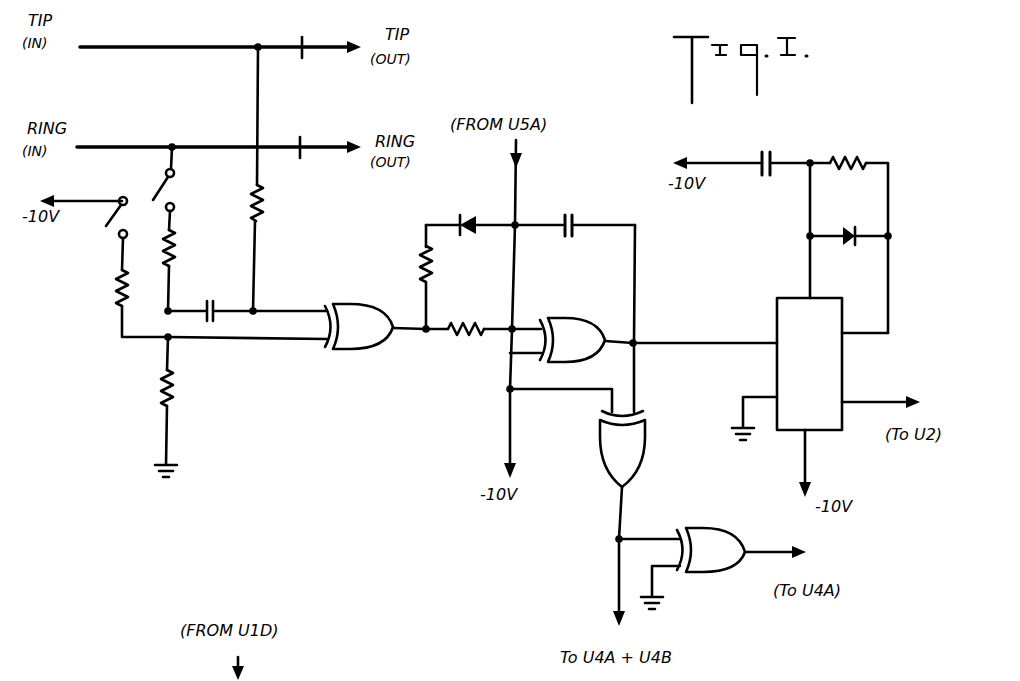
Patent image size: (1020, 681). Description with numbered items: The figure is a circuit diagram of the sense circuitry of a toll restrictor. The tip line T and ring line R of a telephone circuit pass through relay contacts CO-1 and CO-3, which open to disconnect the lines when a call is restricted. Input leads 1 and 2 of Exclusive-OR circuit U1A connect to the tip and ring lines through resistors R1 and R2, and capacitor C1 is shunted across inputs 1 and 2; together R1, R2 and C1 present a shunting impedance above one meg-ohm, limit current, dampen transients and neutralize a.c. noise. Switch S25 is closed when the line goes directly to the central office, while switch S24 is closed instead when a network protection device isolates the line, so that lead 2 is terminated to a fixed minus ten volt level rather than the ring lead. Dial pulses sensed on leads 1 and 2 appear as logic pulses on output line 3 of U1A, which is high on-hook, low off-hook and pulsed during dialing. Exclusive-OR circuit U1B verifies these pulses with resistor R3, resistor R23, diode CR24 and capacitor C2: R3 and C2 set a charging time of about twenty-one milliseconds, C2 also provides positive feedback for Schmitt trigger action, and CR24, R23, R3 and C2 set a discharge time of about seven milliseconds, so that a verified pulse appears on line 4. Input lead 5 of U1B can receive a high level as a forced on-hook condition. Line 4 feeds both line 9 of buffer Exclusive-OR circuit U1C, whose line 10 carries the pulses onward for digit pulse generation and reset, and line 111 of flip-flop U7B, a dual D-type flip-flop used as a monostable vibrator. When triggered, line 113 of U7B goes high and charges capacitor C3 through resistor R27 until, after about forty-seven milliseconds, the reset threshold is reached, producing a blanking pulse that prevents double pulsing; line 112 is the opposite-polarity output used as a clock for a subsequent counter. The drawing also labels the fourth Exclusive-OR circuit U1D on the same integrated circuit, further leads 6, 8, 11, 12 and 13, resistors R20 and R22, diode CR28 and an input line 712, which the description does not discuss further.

The input lead 1 is at (304, 308).
The input lead 2 is at (293, 340).
The output line 3 is at (397, 340).
The output line 4 is at (616, 340).
The input lead 5 is at (523, 326).
The U1B second input pin 6 is at (507, 348).
The U1C first input pin 8 is at (610, 401).
The line 9 is at (636, 392).
The line 10 is at (622, 498).
The U1D output pin 11 is at (760, 552).
The U1D first input pin 12 is at (649, 538).
The U1D second input pin 13 is at (658, 566).
The line 111 is at (760, 343).
The line 112 is at (873, 403).
The line 113 is at (858, 340).
The input line from U5A 712 is at (520, 185).
The tip line T is at (173, 42).
The ring line R is at (160, 142).
The relay contact CO-1 is at (299, 34).
The relay contact CO-3 is at (299, 136).
The switch S25 is at (159, 182).
The switch S24 is at (107, 216).
The resistor R1 is at (184, 261).
The resistor R2 is at (273, 179).
The resistor R3 is at (469, 318).
The resistor R20 is at (187, 407).
The resistor R22 is at (124, 287).
The resistor R23 is at (423, 262).
The resistor R27 is at (849, 235).
The capacitor C1 is at (210, 302).
The capacitor C2 is at (575, 213).
The capacitor C3 is at (748, 159).
The diode CR24 is at (470, 214).
The diode CR28 is at (849, 248).
The Exclusive-OR circuit U1A is at (359, 326).
The Exclusive-OR circuit U1B is at (572, 340).
The Exclusive-OR circuit U1C is at (622, 449).
The Exclusive-OR circuit U1D is at (711, 550).
The dual D-type flip-flop circuit U7B is at (835, 394).